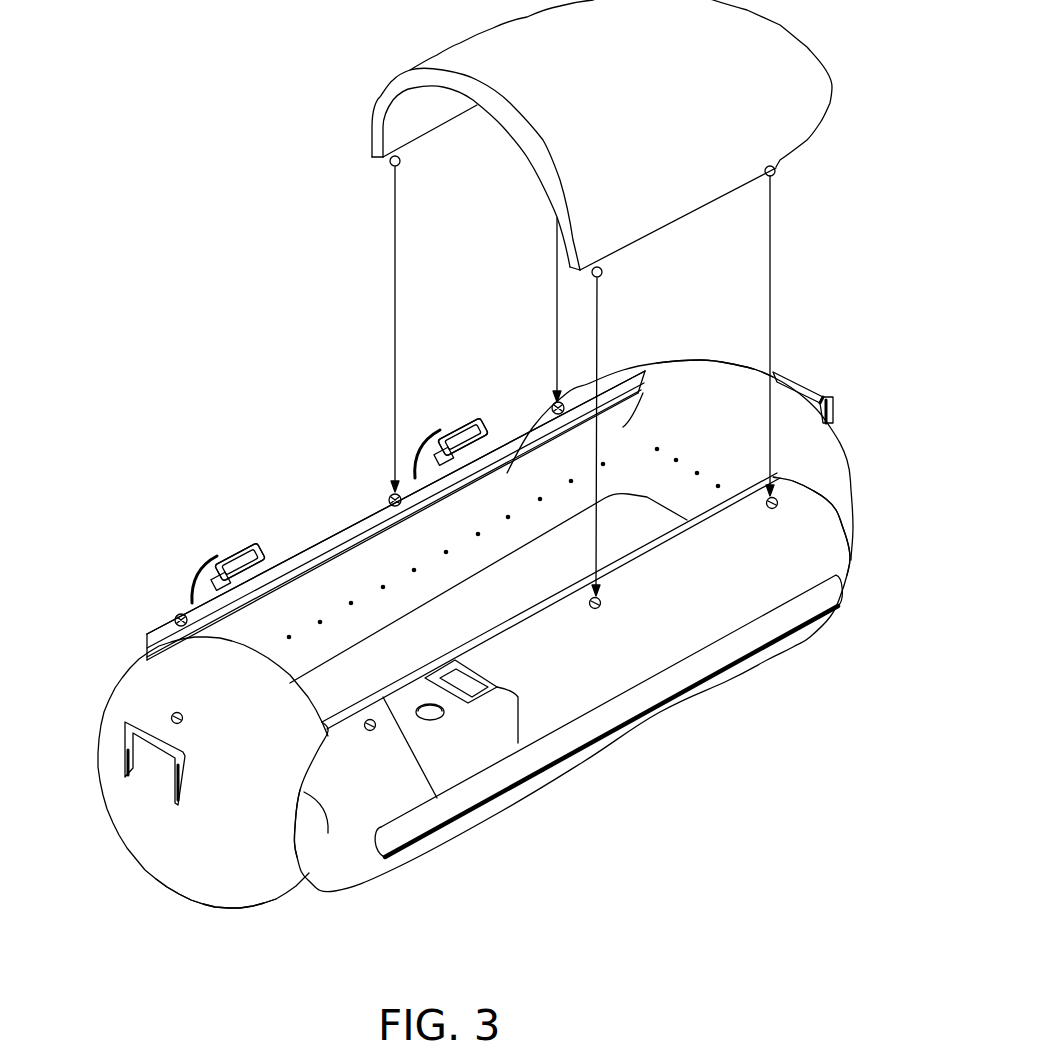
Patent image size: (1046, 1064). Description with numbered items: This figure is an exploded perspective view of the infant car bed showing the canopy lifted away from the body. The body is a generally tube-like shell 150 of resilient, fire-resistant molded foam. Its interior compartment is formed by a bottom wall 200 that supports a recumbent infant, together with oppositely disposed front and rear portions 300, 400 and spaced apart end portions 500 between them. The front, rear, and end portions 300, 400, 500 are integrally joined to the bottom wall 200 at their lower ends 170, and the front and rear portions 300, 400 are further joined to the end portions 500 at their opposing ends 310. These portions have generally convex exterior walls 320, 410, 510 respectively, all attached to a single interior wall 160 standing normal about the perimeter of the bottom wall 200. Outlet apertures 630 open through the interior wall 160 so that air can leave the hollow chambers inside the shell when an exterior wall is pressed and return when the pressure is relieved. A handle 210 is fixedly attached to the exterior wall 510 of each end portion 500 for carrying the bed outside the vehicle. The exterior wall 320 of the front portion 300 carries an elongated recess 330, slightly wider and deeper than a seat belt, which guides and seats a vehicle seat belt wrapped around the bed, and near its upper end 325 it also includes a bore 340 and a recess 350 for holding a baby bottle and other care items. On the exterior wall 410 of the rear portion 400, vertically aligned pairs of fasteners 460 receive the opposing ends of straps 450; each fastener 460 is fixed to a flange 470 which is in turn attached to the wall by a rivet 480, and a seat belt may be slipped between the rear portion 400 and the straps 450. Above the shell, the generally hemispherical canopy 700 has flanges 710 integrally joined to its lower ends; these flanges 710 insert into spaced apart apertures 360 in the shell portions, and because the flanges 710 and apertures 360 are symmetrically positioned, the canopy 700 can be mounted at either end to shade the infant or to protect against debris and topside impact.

The shell 150 is at (223, 460).
The interior wall 160 is at (643, 393).
The lower ends 170 is at (407, 626).
The bottom wall 200 is at (470, 595).
The handle 210 is at (185, 780).
The front portion 300 is at (372, 885).
The opposing ends 310 is at (832, 508).
The exterior wall 320 is at (363, 848).
The upper end 325 is at (645, 548).
The recess 330 is at (692, 668).
The bore 340 is at (432, 718).
The recess 350 is at (467, 695).
The apertures 360 is at (387, 495).
The rear portion 400 is at (93, 697).
The exterior wall 410 is at (358, 523).
The strap 450 is at (457, 430).
The fastener 460 is at (485, 411).
The flange 470 is at (490, 416).
The rivet 480 is at (232, 574).
The end portions 500 is at (167, 890).
The exterior wall 510 is at (250, 887).
The outlet aperture 630 is at (697, 470).
The canopy 700 is at (452, 62).
The flanges 710 is at (402, 165).